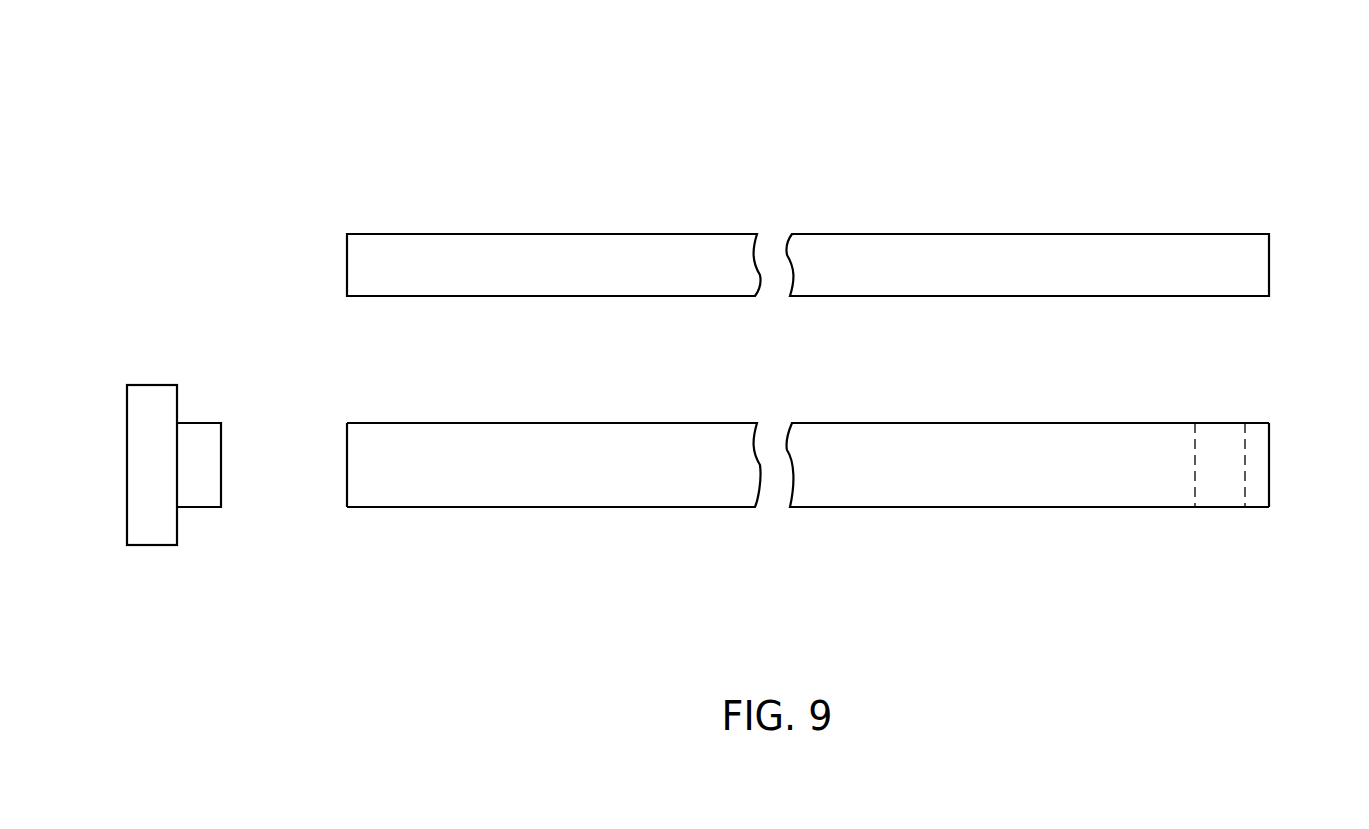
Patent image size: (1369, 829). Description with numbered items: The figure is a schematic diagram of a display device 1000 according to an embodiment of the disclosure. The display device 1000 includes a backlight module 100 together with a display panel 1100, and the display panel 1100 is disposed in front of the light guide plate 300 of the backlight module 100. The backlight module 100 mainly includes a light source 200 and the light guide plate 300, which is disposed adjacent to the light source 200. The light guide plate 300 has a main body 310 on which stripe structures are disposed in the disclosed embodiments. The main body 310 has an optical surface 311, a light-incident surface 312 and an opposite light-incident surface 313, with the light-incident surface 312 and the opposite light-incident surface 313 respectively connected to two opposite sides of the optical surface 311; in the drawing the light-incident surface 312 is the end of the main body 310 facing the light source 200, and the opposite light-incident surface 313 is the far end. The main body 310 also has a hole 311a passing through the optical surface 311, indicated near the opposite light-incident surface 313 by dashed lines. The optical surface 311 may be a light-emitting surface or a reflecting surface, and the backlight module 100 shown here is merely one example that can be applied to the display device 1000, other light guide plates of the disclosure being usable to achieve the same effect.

The display device 1000 is at (103, 117).
The display panel 1100 is at (551, 248).
The backlight module 100 is at (303, 295).
The light source 200 is at (152, 400).
The light guide plate 300 is at (342, 400).
The main body 310 is at (565, 452).
The optical surface 311 is at (998, 422).
The hole 311a is at (1217, 488).
The light-incident surface 312 is at (347, 485).
The opposite light-incident surface 313 is at (1270, 441).